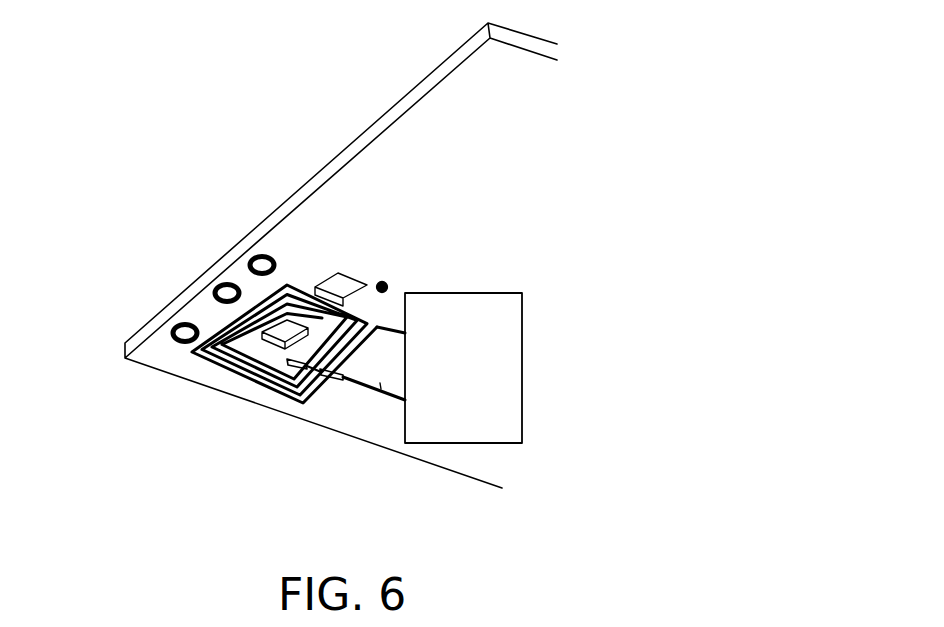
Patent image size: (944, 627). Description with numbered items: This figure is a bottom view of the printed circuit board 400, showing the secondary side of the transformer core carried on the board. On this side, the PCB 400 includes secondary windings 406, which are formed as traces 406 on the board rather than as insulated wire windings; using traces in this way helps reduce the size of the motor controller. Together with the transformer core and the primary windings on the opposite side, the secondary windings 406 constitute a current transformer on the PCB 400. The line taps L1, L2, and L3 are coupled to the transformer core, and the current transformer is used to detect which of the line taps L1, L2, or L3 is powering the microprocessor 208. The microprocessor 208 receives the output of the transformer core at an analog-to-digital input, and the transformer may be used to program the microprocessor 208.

The printed circuit board 400 is at (207, 78).
The line tap L1 is at (170, 320).
The line tap L2 is at (250, 260).
The line tap L3 is at (214, 288).
The secondary windings 406 is at (202, 357).
The microprocessor 208 is at (463, 368).